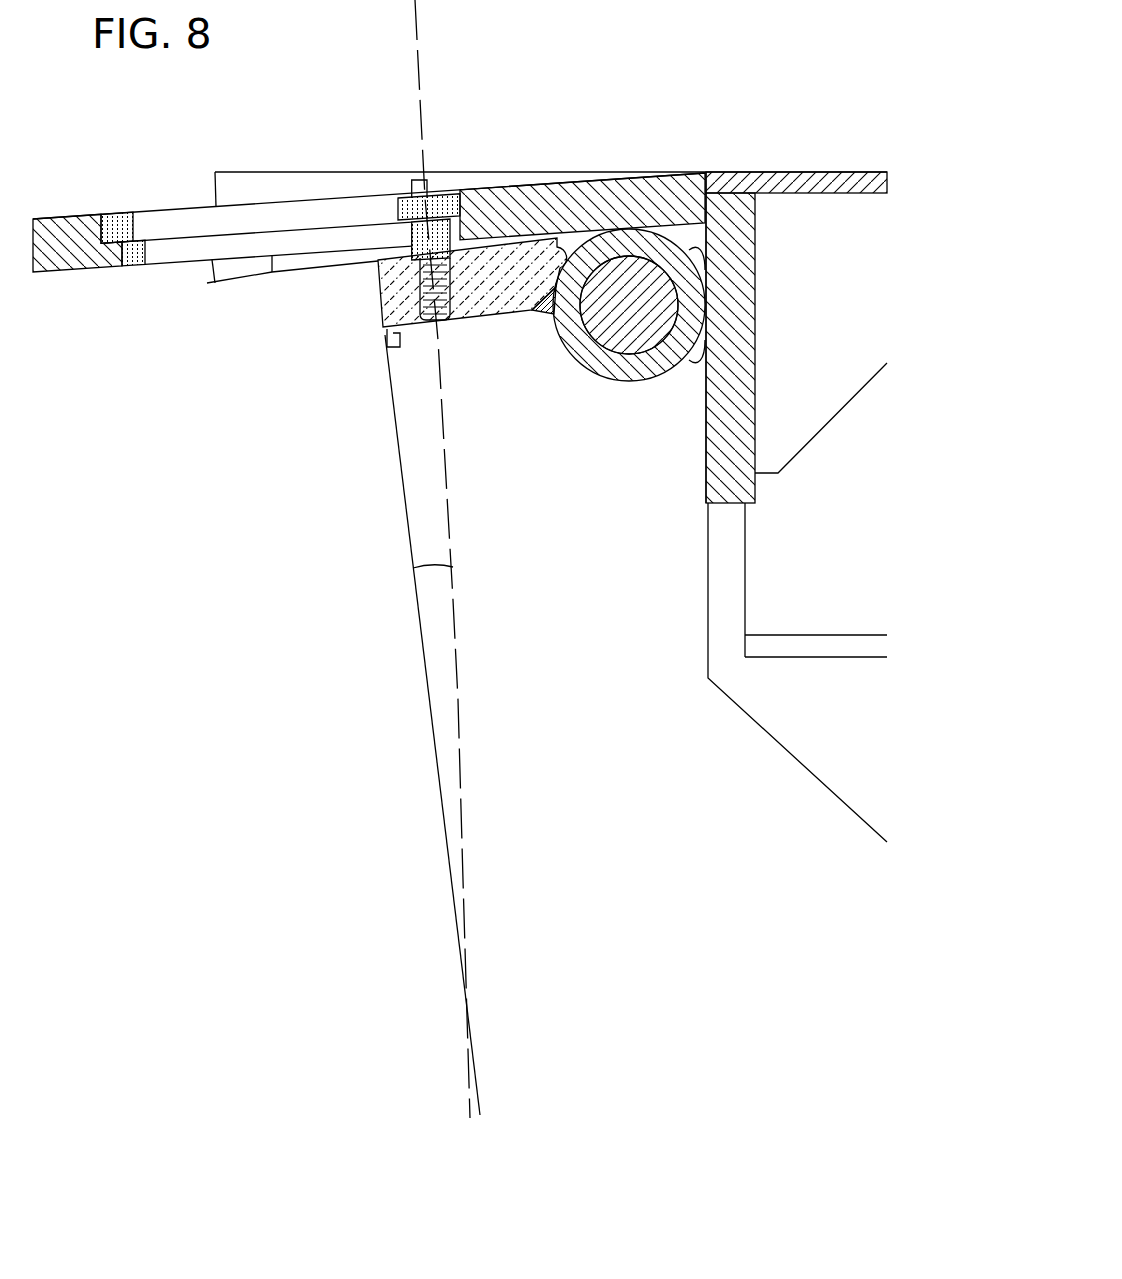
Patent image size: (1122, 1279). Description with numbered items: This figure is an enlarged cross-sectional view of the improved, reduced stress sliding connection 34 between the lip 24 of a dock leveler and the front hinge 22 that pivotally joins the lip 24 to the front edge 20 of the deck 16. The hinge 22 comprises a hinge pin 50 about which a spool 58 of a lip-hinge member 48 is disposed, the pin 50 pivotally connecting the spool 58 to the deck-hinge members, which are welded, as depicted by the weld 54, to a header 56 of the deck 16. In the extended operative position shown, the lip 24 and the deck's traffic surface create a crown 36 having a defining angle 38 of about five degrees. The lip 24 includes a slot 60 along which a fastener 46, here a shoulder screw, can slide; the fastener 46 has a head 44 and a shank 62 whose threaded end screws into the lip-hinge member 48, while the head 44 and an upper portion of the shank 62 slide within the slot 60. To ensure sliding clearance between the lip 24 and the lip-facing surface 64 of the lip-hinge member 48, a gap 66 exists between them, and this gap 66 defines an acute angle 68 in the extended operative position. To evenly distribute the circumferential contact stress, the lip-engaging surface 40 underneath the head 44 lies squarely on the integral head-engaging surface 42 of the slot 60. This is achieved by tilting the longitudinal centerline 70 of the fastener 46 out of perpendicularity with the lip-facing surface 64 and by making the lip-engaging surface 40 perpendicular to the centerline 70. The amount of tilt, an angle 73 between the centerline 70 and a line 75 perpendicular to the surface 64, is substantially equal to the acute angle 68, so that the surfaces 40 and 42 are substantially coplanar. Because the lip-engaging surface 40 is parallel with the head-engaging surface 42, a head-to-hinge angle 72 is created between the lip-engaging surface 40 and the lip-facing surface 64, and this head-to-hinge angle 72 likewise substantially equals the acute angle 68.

The deck 16 is at (805, 172).
The front edge 20 is at (706, 168).
The front hinge 22 is at (592, 415).
The lip 24 is at (62, 217).
The sliding connection 34 is at (300, 156).
The crown 36 is at (712, 160).
The defining angle 38 is at (213, 192).
The lip-engaging surface 40 is at (405, 226).
The head-engaging surface 42 is at (154, 238).
The head 44 is at (398, 213).
The fastener 46 is at (438, 198).
The lip-hinge member 48 is at (385, 332).
The hinge pin 50 is at (608, 323).
The weld 54 is at (700, 358).
The header 56 is at (703, 484).
The spool 58 is at (617, 383).
The slot 60 is at (105, 233).
The shank 62 is at (377, 287).
The lip-facing surface 64 is at (485, 198).
The gap 66 is at (348, 257).
The acute angle 68 is at (270, 265).
The longitudinal centerline 70 is at (425, 148).
The head-to-hinge angle 72 is at (208, 272).
The angle 73 is at (432, 568).
The line 75 is at (398, 445).